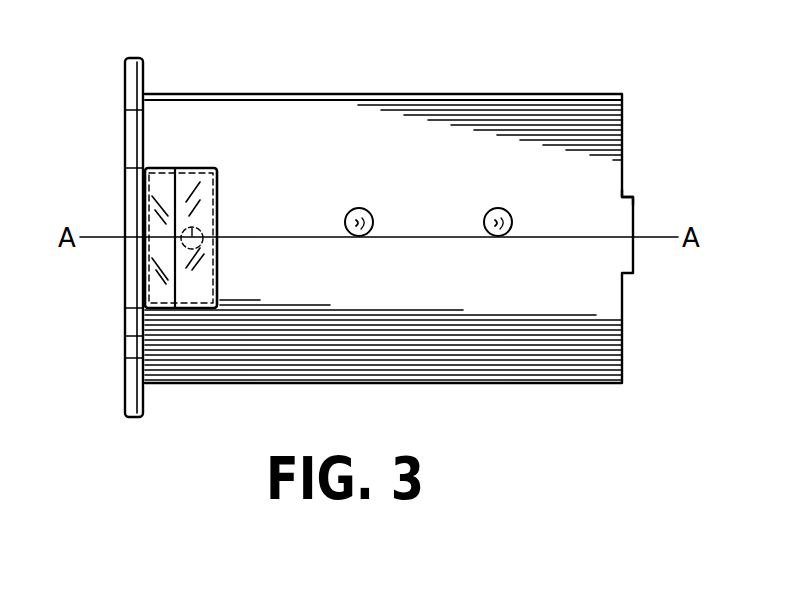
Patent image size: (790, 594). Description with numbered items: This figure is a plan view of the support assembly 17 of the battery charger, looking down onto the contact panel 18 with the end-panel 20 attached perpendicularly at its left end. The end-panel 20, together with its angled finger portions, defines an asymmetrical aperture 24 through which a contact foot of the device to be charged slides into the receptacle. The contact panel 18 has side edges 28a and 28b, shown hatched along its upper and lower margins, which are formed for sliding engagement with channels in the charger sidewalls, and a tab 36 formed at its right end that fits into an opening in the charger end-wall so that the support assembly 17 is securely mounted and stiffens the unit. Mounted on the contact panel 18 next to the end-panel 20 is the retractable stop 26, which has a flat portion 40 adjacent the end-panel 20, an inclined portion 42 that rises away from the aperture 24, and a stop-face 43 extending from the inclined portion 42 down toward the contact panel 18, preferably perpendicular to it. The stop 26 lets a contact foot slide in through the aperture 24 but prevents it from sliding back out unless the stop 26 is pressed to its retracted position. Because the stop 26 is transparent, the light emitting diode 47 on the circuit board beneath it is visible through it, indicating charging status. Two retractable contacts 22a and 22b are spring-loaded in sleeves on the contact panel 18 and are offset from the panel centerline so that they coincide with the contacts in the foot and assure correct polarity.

The support assembly 17 is at (492, 70).
The contact panel 18 is at (298, 112).
The end-panel 20 is at (125, 374).
The retractable contact 22a is at (357, 210).
The retractable contact 22b is at (502, 210).
The aperture 24 is at (128, 126).
The retractable stop 26 is at (204, 160).
The side edge 28a is at (380, 384).
The side edge 28b is at (444, 100).
The tab 36 is at (620, 205).
The flat portion 40 is at (162, 208).
The inclined portion 42 is at (205, 268).
The stop-face 43 is at (219, 186).
The light emitting diode (LED) 47 is at (220, 204).